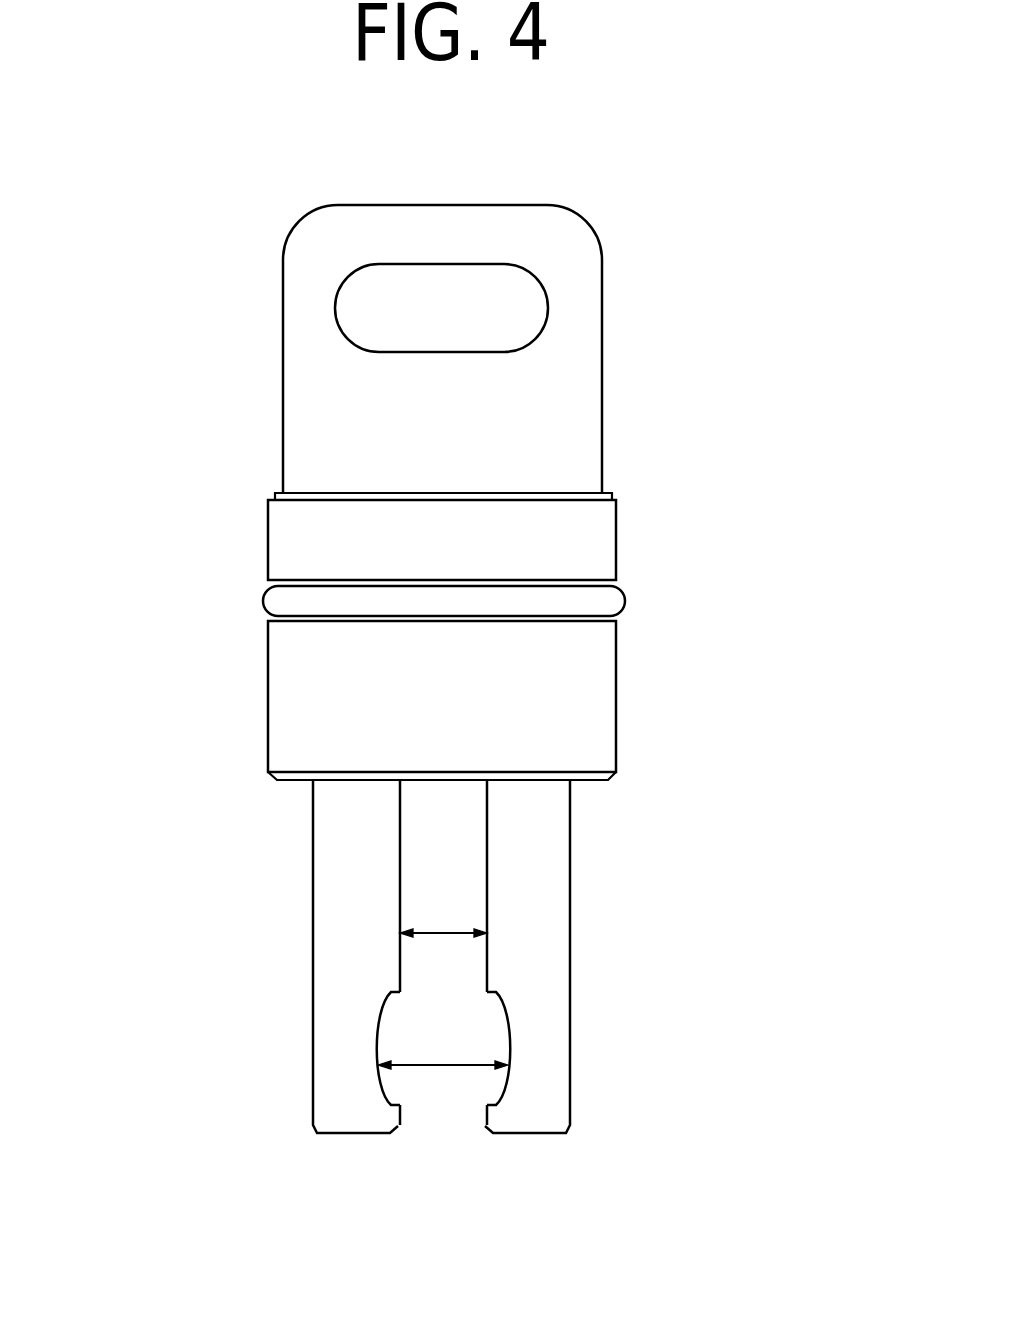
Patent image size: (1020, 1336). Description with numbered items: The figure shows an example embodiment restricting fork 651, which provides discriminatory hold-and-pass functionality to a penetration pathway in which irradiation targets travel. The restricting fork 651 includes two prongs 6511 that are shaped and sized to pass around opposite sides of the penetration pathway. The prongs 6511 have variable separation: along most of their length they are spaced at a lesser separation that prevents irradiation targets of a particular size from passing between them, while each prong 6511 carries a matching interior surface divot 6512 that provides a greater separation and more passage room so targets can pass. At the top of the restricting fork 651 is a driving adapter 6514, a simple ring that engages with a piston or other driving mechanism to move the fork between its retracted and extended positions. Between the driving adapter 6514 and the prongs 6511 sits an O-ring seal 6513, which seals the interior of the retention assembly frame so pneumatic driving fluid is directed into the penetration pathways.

The restricting fork 651 is at (332, 702).
The prongs 6511 is at (540, 1103).
The interior surface divot 6512 is at (508, 1047).
The O-ring seal 6513 is at (553, 608).
The driving adapter 6514 is at (512, 308).